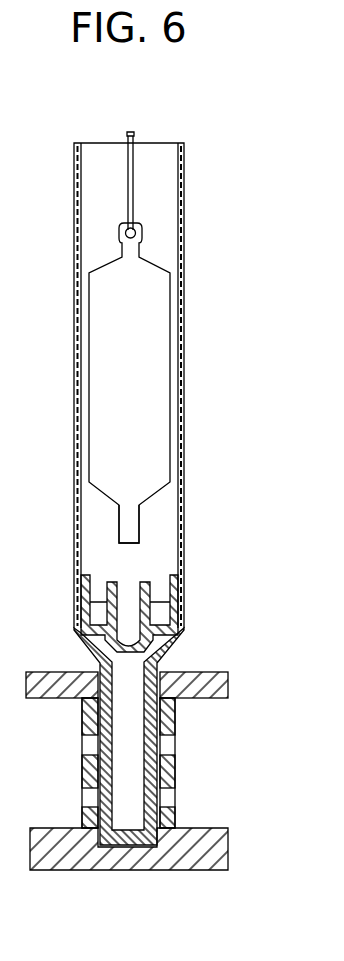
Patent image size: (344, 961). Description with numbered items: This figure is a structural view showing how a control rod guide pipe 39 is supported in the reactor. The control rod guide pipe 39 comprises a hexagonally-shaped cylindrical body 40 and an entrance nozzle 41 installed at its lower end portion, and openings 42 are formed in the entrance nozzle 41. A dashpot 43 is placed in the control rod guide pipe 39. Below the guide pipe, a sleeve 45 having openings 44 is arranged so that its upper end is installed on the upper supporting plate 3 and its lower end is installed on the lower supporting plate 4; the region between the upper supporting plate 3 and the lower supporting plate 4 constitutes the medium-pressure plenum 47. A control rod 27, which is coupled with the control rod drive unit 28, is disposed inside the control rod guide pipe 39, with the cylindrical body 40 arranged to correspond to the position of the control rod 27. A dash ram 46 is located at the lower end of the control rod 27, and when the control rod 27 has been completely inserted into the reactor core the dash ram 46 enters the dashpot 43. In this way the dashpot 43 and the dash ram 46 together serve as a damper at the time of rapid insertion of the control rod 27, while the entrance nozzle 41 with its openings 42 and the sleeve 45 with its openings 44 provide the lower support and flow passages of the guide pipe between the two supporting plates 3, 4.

The upper supporting plate 3 is at (213, 675).
The lower supporting plate 4 is at (208, 860).
The control rod 27 is at (157, 340).
The control rod drive unit 28 is at (132, 157).
The control rod guide pipe 39 is at (185, 215).
The hexagonally-shaped cylindrical body 40 is at (184, 433).
The entrance nozzle 41 is at (155, 723).
The openings 42 is at (155, 800).
The dashpot 43 is at (150, 590).
The openings 44 is at (90, 800).
The sleeve 45 is at (88, 720).
The dash ram 46 is at (133, 540).
The medium-pressure plenum 47 is at (202, 762).